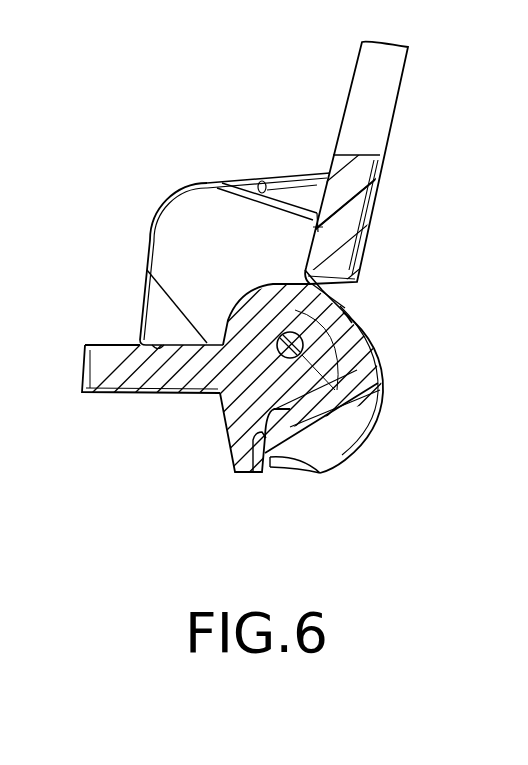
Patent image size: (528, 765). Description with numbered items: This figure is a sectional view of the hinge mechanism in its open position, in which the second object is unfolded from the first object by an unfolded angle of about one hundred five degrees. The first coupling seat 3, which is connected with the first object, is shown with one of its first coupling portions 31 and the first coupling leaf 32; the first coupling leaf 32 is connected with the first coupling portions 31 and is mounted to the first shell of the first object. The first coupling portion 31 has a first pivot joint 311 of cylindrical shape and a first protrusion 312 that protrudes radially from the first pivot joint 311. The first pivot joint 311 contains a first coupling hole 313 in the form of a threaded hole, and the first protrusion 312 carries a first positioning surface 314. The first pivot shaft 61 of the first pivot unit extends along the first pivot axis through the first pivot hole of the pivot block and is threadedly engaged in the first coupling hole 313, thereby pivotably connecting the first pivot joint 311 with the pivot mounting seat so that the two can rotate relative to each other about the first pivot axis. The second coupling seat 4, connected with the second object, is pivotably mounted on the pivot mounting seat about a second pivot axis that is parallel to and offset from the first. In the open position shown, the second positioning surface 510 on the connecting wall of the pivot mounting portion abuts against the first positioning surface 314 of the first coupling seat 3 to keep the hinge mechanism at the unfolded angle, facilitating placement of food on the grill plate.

The first coupling seat 3 is at (148, 440).
The second coupling seat 4 is at (412, 96).
The first coupling portion 31 is at (355, 312).
The first coupling leaf 32 is at (110, 370).
The first pivot joint 311 is at (327, 342).
The first protrusion 312 is at (240, 427).
The first coupling hole 313 is at (322, 303).
The first positioning surface 314 is at (253, 433).
The first pivot shaft 61 is at (343, 404).
The second positioning surface 510 is at (318, 473).